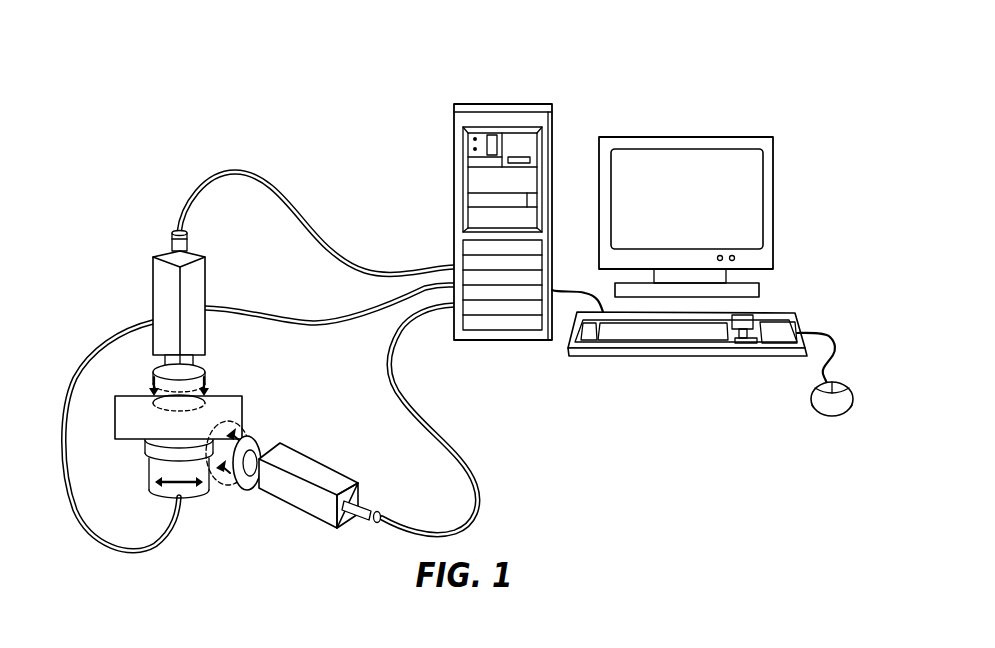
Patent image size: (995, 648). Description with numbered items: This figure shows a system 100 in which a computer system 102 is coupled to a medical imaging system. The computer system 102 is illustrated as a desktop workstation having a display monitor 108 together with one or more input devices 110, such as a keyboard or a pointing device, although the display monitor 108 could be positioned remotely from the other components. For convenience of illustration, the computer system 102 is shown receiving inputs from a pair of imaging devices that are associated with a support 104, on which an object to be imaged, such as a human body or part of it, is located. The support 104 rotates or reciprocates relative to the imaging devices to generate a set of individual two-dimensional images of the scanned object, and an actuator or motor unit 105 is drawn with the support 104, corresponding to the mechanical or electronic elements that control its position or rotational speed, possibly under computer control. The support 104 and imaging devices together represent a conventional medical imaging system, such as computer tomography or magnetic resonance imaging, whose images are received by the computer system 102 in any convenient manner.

The system 100 is at (262, 60).
The computer system 102 is at (500, 104).
The support 104 is at (152, 473).
The actuator / motor unit 105 is at (297, 500).
The display monitor 108 is at (686, 137).
The input devices 110 is at (685, 357).